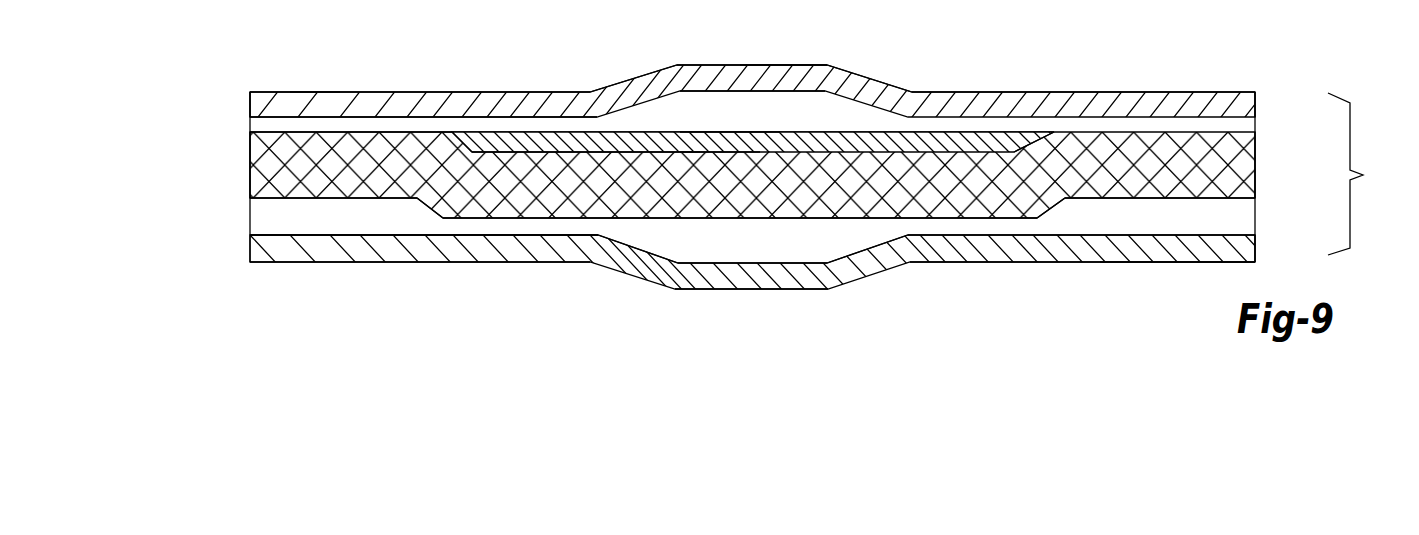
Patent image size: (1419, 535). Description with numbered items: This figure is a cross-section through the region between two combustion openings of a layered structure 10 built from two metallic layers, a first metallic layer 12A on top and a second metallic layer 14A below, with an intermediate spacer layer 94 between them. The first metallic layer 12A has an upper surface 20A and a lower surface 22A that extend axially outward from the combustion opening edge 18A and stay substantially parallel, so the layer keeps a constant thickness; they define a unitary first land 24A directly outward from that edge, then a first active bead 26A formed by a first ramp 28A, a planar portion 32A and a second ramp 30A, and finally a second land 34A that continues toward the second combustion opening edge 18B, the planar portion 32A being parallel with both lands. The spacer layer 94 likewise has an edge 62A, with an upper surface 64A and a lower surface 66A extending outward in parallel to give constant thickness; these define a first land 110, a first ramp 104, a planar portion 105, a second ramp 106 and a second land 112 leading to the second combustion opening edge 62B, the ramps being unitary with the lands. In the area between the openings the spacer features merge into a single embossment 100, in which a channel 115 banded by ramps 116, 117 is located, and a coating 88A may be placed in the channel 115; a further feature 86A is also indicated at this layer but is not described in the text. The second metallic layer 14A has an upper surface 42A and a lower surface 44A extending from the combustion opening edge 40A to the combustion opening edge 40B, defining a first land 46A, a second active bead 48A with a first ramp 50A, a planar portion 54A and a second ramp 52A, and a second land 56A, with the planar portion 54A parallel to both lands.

The laminated composite structure 10 is at (1358, 174).
The first metallic layer 12A is at (273, 106).
The second metallic layer 14A is at (502, 253).
The combustion opening edge 18A is at (250, 108).
The second combustion opening edge 18B is at (1255, 104).
The upper surface 20A is at (460, 92).
The lower surface 22A is at (417, 117).
The first land 24A is at (320, 106).
The first active bead 26A is at (770, 82).
The first ramp 28A is at (633, 87).
The second ramp 30A is at (893, 96).
The planar portion 32A is at (791, 62).
The second land 34A is at (1088, 102).
The combustion opening edge 40A is at (250, 252).
The combustion opening edge 40B is at (1255, 250).
The upper surface 42A is at (276, 218).
The lower surface 44A is at (1200, 262).
The first land 46A is at (368, 250).
The second active bead 48A is at (741, 289).
The first ramp 50A is at (633, 277).
The second ramp 52A is at (860, 275).
The planar portion 54A is at (803, 289).
The second land 56A is at (1020, 253).
The combustion opening edge 62A is at (250, 172).
The second combustion opening edge 62B is at (1255, 165).
The upper surface 64A is at (364, 132).
The lower surface 66A is at (757, 133).
The bond region 86A is at (606, 155).
The coating 88A is at (725, 132).
The intermediate spacer layer 94 is at (278, 188).
The embossment 100 is at (863, 167).
The first ramp 104 is at (432, 207).
The planar portion 105 is at (770, 212).
The second ramp 106 is at (1053, 205).
The first land 110 is at (368, 192).
The second land 112 is at (1182, 187).
The channel 115 is at (718, 153).
The ramp 116 is at (455, 146).
The ramp 117 is at (1030, 150).